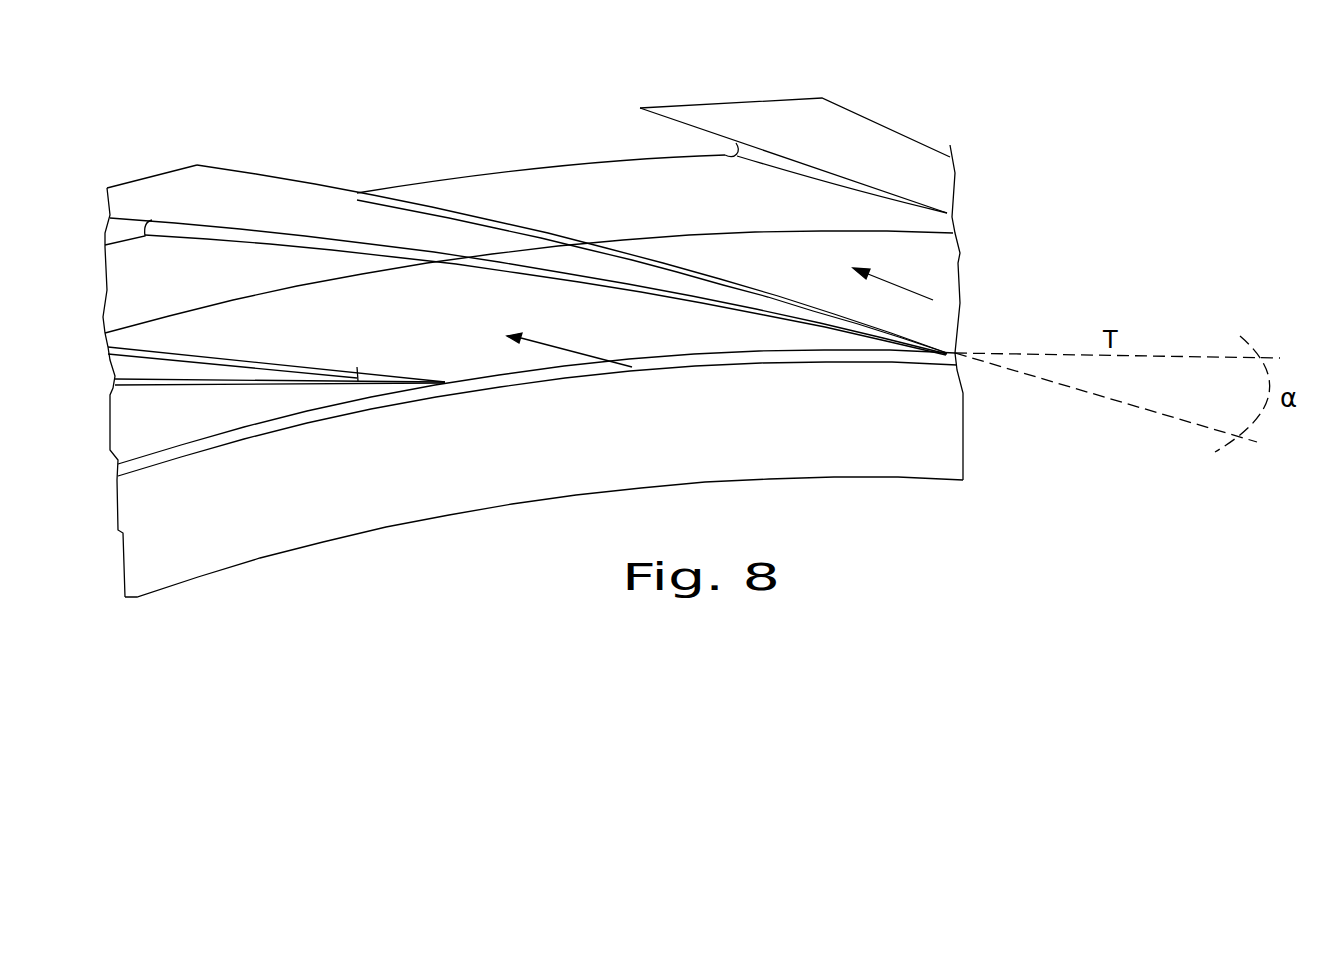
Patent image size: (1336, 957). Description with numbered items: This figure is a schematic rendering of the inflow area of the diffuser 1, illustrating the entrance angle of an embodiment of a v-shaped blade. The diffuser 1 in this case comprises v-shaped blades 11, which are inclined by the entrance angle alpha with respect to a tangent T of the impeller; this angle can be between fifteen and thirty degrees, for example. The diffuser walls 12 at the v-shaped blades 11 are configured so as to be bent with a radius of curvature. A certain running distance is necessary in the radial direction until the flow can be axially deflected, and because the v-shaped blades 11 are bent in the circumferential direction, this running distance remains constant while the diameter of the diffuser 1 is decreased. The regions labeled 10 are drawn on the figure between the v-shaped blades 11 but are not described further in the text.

The diffuser 1 is at (722, 68).
The cutting segment 10 is at (690, 212).
The v-shaped blade 11 is at (403, 225).
The diffuser wall 12 is at (233, 237).